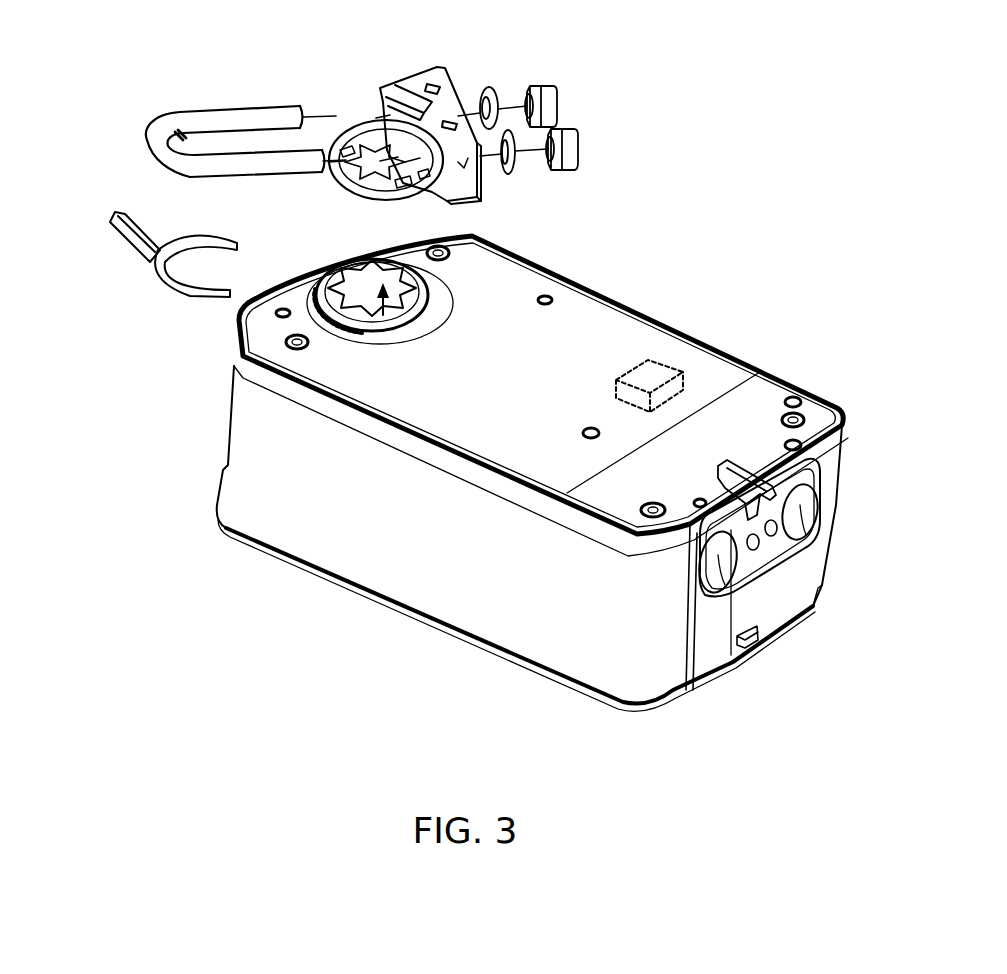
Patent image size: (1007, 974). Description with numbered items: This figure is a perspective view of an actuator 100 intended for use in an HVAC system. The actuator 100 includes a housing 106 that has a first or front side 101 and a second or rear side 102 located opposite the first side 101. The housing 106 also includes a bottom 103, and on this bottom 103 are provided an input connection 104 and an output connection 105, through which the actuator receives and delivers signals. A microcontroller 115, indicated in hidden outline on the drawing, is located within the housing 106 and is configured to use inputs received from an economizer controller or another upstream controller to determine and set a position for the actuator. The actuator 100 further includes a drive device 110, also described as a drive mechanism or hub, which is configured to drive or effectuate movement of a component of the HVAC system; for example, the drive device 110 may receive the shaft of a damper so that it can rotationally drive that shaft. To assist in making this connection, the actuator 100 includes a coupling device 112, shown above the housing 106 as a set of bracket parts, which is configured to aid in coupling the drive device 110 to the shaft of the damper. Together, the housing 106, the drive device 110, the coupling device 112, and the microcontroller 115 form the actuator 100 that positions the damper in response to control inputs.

The actuator 100 is at (704, 175).
The first or front side 101 is at (592, 323).
The second or rear side 102 is at (410, 638).
The bottom 103 is at (703, 648).
The input connection 104 is at (731, 655).
The output connection 105 is at (813, 606).
The housing 106 is at (352, 547).
The drive device 110 is at (393, 333).
The coupling device 112 is at (127, 58).
The microcontroller 115 is at (657, 377).